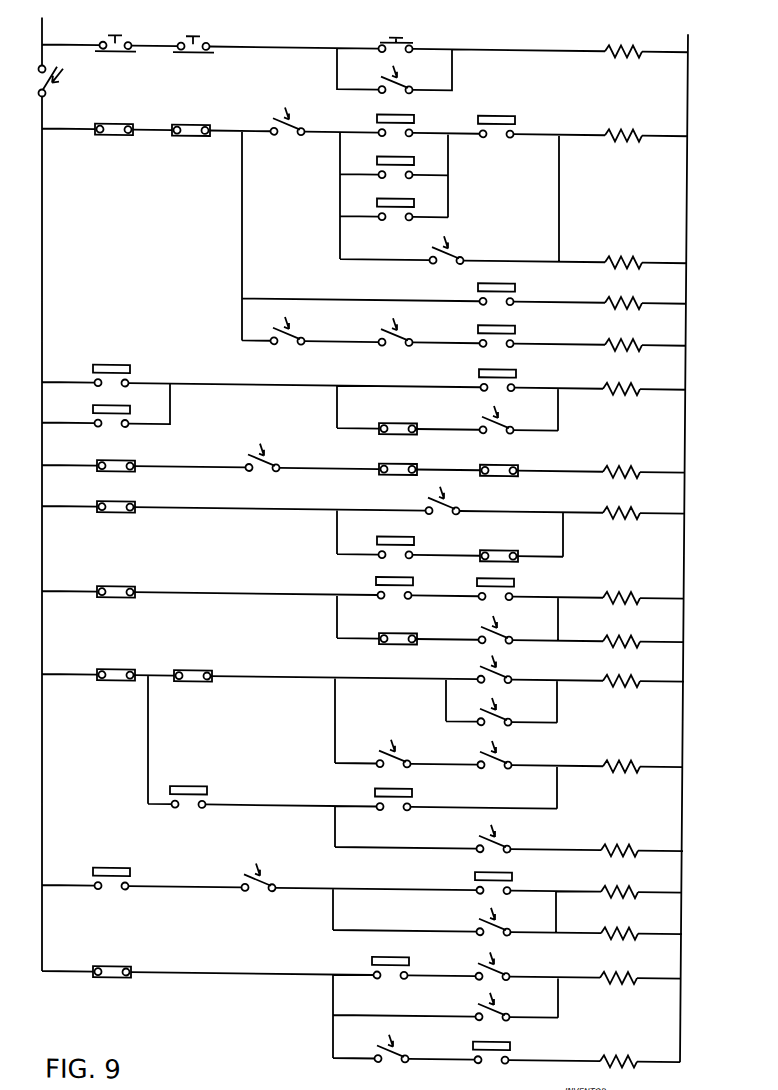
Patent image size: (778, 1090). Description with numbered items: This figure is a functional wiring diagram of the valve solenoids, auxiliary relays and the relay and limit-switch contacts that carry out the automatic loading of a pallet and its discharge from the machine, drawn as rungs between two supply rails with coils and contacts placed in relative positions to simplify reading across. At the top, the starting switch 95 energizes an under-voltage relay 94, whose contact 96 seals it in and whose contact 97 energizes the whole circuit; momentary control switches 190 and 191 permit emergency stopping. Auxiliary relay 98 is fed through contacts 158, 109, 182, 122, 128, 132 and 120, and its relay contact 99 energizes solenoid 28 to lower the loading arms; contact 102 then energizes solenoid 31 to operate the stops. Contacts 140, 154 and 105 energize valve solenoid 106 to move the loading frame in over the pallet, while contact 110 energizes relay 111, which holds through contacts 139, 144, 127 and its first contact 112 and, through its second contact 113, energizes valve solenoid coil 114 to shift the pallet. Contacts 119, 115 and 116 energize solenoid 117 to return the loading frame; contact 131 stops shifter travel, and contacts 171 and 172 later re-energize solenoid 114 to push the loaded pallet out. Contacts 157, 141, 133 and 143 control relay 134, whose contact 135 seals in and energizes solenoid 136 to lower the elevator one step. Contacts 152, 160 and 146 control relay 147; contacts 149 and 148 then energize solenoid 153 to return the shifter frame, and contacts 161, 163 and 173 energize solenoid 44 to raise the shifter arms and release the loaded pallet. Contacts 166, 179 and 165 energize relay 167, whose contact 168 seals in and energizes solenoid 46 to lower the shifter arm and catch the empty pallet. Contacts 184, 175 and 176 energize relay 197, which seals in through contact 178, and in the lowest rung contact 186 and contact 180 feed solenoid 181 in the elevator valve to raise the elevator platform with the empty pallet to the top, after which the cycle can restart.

The contact 97 is at (37, 81).
The momentary control switch 190 is at (115, 46).
The momentary control switch 191 is at (193, 46).
The starter switch 95 is at (391, 39).
The contact 96 is at (407, 79).
The under-voltage relay 94 is at (623, 54).
The second contact 158 is at (113, 142).
The contact 109 is at (191, 142).
The fourth contact 182 is at (286, 133).
The contact 122 is at (395, 136).
The second contact 128 is at (395, 177).
The contact 132 is at (395, 219).
The contact 120 is at (496, 136).
The auxiliary relay 98 is at (623, 137).
The relay contact 99 is at (454, 249).
The solenoid 28 is at (627, 249).
The contact 102 is at (496, 288).
The solenoid 31 is at (626, 293).
The contact 140 is at (286, 343).
The contact 154 is at (394, 344).
The contact 105 is at (496, 345).
The valve solenoid 106 is at (608, 336).
The contact 139 is at (130, 373).
The contact 144 is at (130, 419).
The second contact 110 is at (513, 377).
The relay 111 is at (644, 373).
The contact 127 is at (398, 417).
The first contact 112 is at (508, 418).
The contact 119 is at (116, 455).
The valve solenoid coil 114 is at (443, 494).
The second contact 115 is at (398, 458).
The second contact 116 is at (499, 459).
The valve solenoid 117 is at (607, 461).
The contact 131 is at (115, 517).
The second contact 113 is at (453, 500).
The contact 171 is at (410, 542).
The contact 172 is at (499, 546).
The first contact 157 is at (114, 603).
The contact 141 is at (369, 588).
The third contact 133 is at (513, 586).
The relay 134 is at (635, 583).
The contact 143 is at (398, 628).
The contact 135 is at (508, 629).
The solenoid 136 is at (617, 632).
The contact 152 is at (115, 663).
The third contact 160 is at (192, 664).
The contact 146 is at (476, 669).
The relay 147 is at (559, 700).
The contact 149 is at (391, 750).
The contact 148 is at (507, 755).
The solenoid 153 is at (598, 768).
The fourth contact 161 is at (204, 790).
The first contact 163 is at (409, 796).
The contact 173 is at (476, 837).
The solenoid 44 is at (624, 844).
The fifth contact 166 is at (111, 874).
The second contact 179 is at (258, 886).
The third contact 165 is at (474, 878).
The relay 167 is at (630, 879).
The contact 168 is at (474, 920).
The solenoid 46 is at (622, 926).
The contact 184 is at (112, 960).
The fourth contact 175 is at (390, 960).
The third contact 176 is at (505, 962).
The first contact 178 is at (473, 1006).
The limit switch 186 is at (387, 1060).
The contact 180 is at (489, 1064).
The solenoid 181 is at (597, 1054).
The relay 197 is at (618, 978).